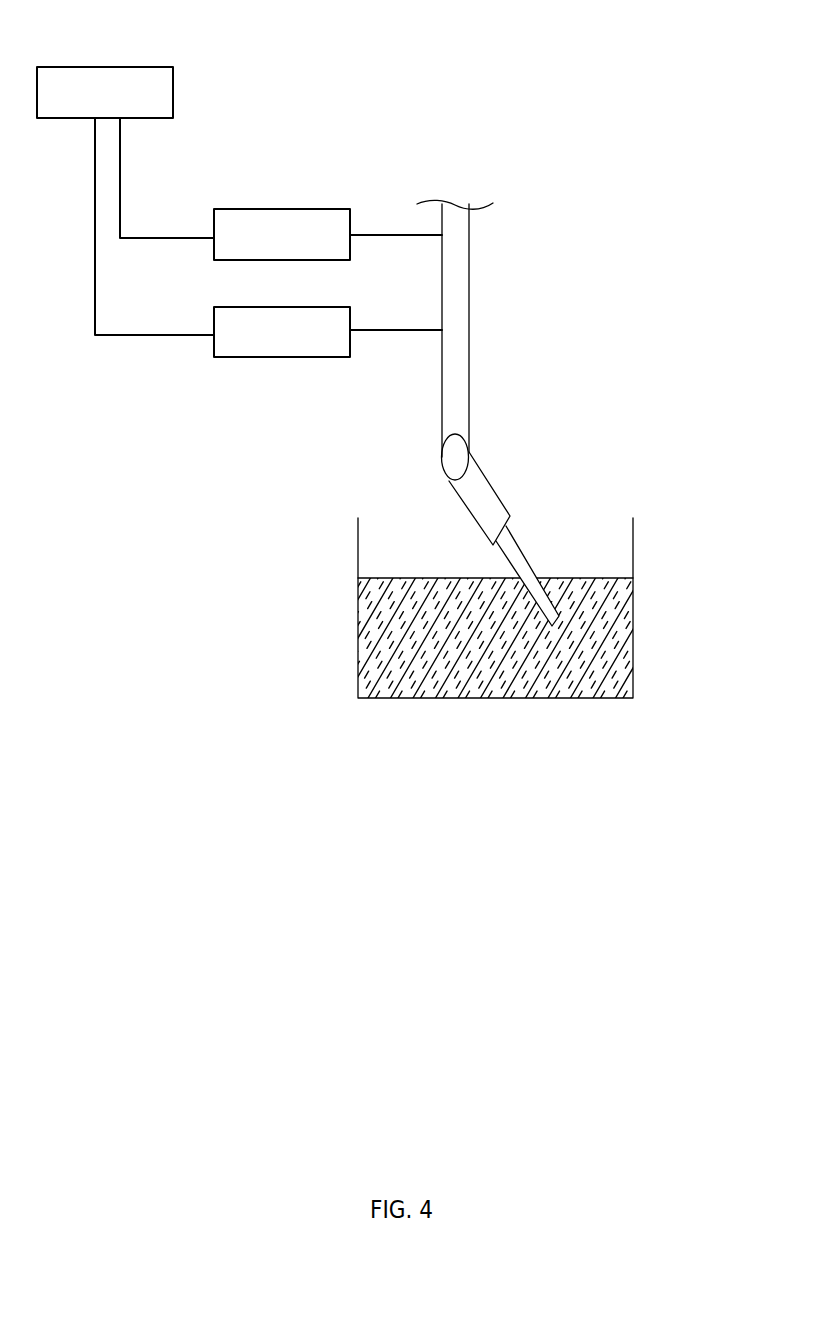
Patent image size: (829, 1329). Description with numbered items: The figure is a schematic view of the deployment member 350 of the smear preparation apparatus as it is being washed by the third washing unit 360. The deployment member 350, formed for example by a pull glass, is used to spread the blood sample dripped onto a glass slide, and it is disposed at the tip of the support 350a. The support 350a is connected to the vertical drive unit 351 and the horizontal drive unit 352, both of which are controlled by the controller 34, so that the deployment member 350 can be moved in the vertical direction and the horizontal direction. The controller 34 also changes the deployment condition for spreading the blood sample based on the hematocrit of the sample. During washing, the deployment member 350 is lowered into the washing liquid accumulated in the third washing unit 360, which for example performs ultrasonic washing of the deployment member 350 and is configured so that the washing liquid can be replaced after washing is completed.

The controller 34 is at (137, 67).
The vertical drive unit 351 is at (344, 208).
The horizontal drive unit 352 is at (346, 306).
The support 350a is at (488, 423).
The deployment member 350 is at (522, 552).
The third washing unit 360 is at (647, 648).